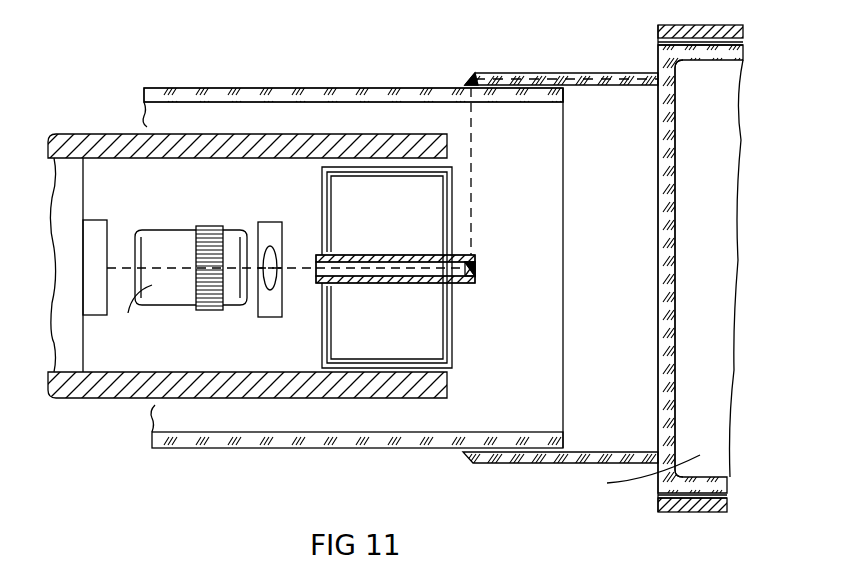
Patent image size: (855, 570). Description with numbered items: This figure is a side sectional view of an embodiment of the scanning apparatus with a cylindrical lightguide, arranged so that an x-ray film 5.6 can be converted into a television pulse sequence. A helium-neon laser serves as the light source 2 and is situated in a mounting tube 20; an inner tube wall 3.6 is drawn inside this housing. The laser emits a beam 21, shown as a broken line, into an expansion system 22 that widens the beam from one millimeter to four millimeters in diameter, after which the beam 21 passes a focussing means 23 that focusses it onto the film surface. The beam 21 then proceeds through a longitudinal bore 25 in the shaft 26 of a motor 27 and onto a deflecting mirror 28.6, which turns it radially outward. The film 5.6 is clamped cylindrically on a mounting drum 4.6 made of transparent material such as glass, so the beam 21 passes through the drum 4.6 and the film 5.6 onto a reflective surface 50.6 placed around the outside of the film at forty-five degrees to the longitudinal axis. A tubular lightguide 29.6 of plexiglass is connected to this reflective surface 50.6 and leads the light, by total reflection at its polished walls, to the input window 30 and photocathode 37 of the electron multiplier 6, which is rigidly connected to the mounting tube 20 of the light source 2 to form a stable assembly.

The light source 2 is at (94, 228).
The expansion system 22 is at (187, 233).
The focussing means 23 is at (267, 221).
The beam 21 is at (301, 262).
The longitudinal bore 25 is at (357, 264).
The shaft 26 is at (405, 256).
The motor 27 is at (340, 343).
The mirror 28.6 is at (478, 272).
The mounting tube 20 is at (60, 398).
The inner tube wall 3.6 is at (122, 365).
The mounting drum 4.6 is at (198, 97).
The x-ray film 5.6 is at (333, 92).
The reflective surface 50.6 is at (467, 82).
The tubular lightguide 29.6 is at (576, 78).
The input window 30 is at (664, 153).
The photocathode 37 is at (676, 195).
The electron multiplier 6 is at (690, 364).